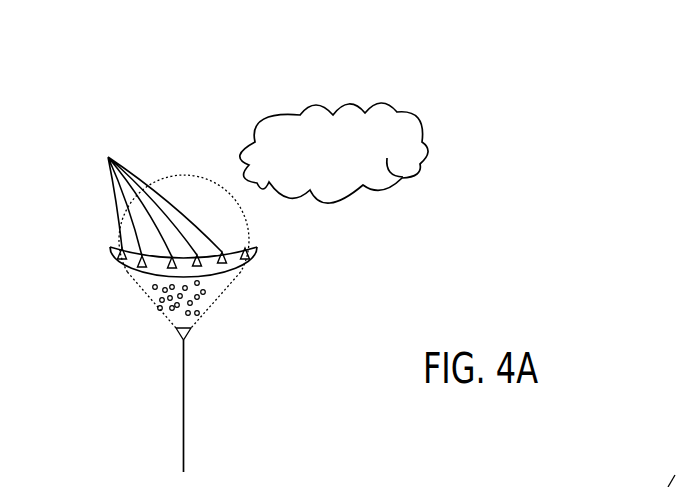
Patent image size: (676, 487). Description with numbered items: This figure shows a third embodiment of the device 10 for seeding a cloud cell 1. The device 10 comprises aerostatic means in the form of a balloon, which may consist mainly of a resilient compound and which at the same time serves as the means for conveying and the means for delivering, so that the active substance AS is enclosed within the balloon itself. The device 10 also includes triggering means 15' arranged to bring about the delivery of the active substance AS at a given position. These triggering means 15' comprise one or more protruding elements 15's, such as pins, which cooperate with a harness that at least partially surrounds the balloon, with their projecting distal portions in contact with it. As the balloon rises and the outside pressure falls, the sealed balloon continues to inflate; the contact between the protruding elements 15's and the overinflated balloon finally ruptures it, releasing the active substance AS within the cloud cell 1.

The cloud cell 1 is at (382, 137).
The device for seeding 10 is at (200, 301).
The triggering means 15' is at (131, 293).
The protruding elements 15's is at (154, 194).
The active substance AS is at (167, 292).